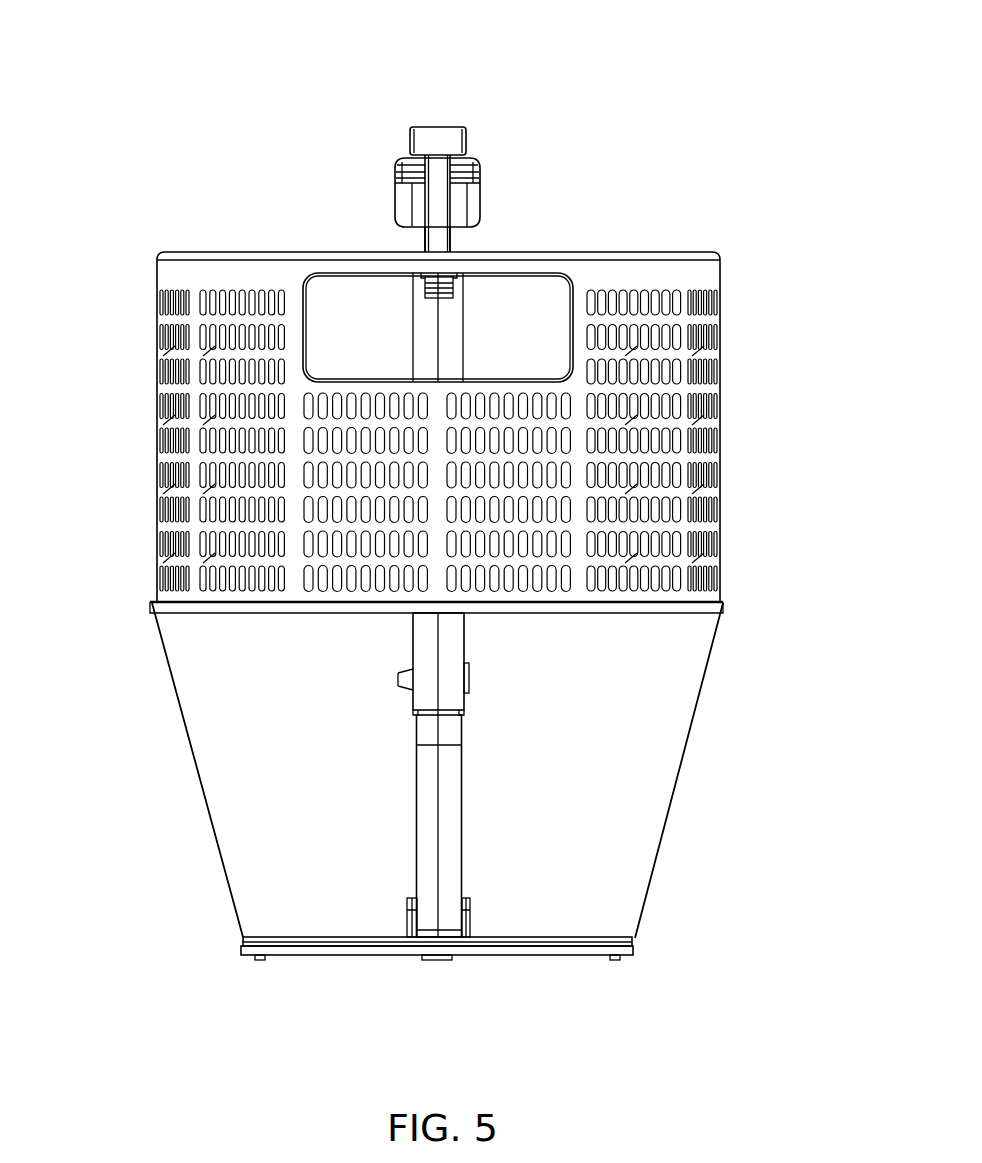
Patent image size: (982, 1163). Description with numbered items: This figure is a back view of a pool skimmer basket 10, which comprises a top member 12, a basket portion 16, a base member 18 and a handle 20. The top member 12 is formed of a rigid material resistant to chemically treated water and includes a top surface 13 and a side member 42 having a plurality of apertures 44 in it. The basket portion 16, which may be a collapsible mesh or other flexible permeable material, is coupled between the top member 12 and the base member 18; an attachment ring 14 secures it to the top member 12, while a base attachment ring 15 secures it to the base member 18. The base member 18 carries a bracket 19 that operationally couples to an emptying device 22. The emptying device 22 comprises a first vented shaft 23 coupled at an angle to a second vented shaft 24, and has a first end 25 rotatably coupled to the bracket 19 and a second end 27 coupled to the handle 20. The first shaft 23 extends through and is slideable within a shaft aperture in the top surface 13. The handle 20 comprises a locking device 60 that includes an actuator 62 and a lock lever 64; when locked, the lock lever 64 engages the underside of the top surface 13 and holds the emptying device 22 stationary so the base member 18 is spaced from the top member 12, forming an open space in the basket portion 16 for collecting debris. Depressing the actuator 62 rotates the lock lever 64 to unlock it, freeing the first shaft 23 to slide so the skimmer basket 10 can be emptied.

The pool skimmer basket 10 is at (215, 128).
The top member 12 is at (752, 242).
The top surface 13 is at (653, 250).
The attachment ring 14 is at (612, 608).
The base attachment ring 15 is at (315, 940).
The basket portion 16 is at (325, 818).
The base member 18 is at (467, 948).
The bracket 19 is at (463, 918).
The handle 20 is at (397, 212).
The emptying device 22 is at (348, 688).
The first vented shaft 23 is at (438, 332).
The second vented shaft 24 is at (440, 803).
The first end 25 is at (433, 918).
The second end 27 is at (422, 243).
The side member 42 is at (686, 279).
The apertures 44 is at (668, 438).
The locking device 60 is at (468, 82).
The actuator 62 is at (440, 138).
The lock lever 64 is at (443, 226).